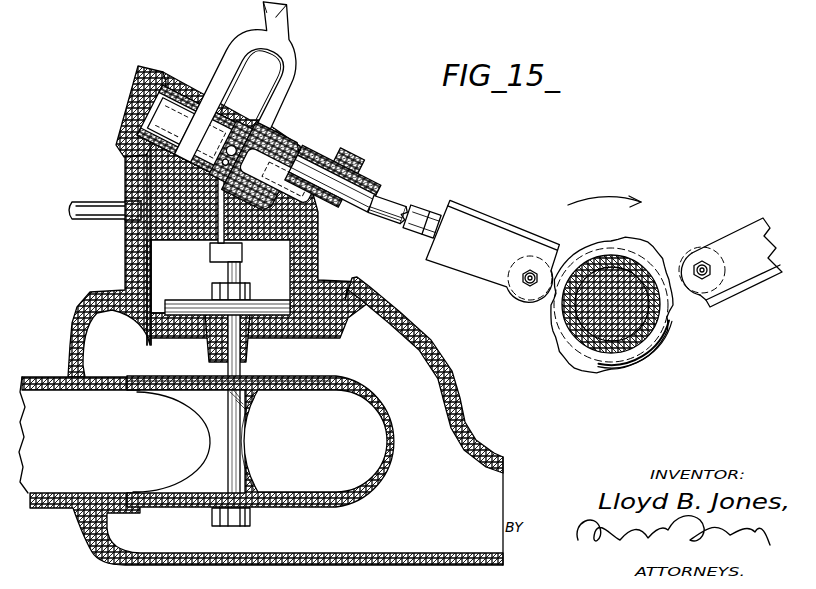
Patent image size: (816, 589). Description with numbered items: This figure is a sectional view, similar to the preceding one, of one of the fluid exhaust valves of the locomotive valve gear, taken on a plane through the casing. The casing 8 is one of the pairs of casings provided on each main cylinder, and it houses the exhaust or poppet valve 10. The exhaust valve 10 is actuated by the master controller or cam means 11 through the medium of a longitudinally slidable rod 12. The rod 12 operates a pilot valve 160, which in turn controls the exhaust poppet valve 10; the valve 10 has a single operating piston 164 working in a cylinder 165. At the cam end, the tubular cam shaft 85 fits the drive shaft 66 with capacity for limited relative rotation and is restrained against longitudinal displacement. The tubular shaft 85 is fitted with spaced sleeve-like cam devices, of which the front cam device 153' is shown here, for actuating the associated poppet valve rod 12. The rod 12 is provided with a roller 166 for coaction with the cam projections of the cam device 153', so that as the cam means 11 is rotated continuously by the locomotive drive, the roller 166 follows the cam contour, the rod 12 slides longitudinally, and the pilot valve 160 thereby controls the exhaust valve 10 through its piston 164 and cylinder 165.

The casing 8 is at (462, 400).
The exhaust poppet valve 10 is at (248, 438).
The master controller or cam means 11 is at (601, 416).
The longitudinally slidable rod 12 is at (407, 215).
The drive shaft 66 is at (646, 348).
The tubular cam shaft 85 is at (618, 355).
The front cam device 153' is at (639, 305).
The pilot valve 160 is at (340, 138).
The operating piston 164 is at (268, 300).
The cylinder 165 is at (160, 272).
The roller 166 is at (524, 298).